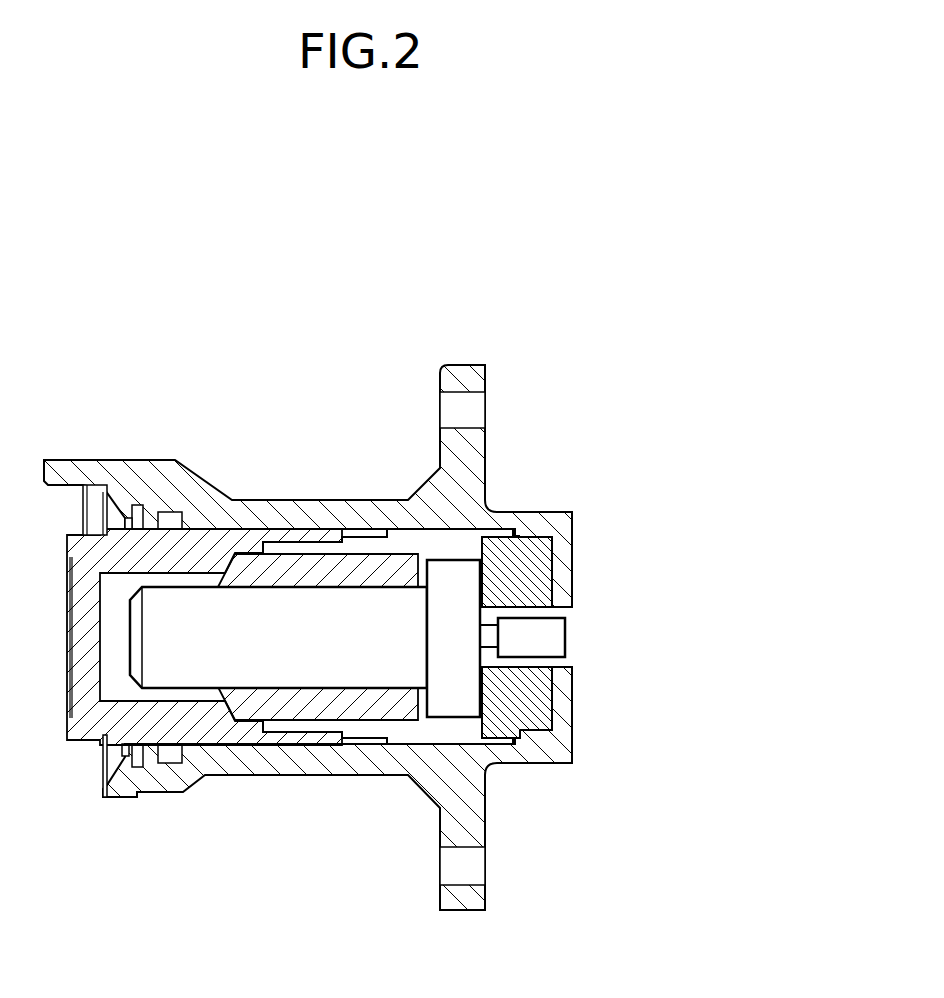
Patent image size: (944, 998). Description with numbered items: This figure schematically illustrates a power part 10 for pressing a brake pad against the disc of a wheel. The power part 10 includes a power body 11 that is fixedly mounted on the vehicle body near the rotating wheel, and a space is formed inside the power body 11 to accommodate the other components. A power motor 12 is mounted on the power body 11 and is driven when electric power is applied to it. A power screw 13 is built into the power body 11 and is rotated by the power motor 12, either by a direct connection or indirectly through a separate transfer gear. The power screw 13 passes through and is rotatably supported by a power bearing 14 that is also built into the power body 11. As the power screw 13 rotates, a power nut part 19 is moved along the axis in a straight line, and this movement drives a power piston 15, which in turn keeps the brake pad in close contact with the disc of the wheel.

The power part 10 is at (632, 311).
The power body 11 is at (317, 767).
The power motor 12 is at (547, 640).
The power screw 13 is at (360, 663).
The power bearing 14 is at (448, 692).
The power piston 15 is at (83, 730).
The power nut part 19 is at (240, 708).